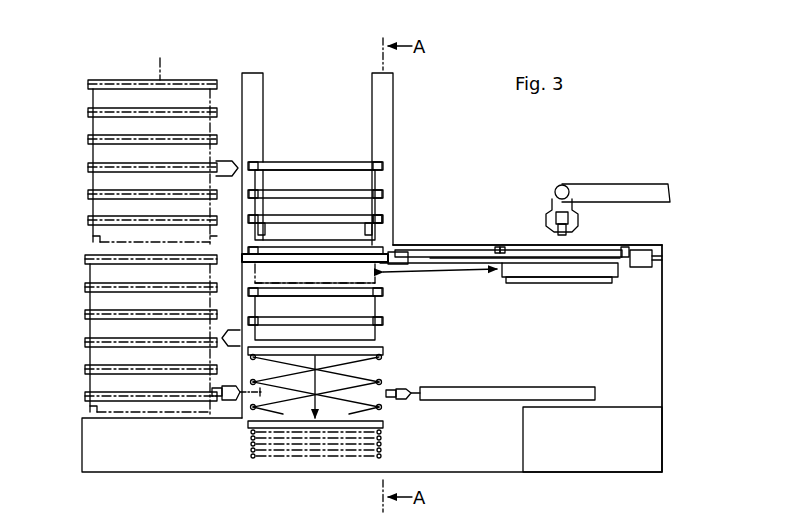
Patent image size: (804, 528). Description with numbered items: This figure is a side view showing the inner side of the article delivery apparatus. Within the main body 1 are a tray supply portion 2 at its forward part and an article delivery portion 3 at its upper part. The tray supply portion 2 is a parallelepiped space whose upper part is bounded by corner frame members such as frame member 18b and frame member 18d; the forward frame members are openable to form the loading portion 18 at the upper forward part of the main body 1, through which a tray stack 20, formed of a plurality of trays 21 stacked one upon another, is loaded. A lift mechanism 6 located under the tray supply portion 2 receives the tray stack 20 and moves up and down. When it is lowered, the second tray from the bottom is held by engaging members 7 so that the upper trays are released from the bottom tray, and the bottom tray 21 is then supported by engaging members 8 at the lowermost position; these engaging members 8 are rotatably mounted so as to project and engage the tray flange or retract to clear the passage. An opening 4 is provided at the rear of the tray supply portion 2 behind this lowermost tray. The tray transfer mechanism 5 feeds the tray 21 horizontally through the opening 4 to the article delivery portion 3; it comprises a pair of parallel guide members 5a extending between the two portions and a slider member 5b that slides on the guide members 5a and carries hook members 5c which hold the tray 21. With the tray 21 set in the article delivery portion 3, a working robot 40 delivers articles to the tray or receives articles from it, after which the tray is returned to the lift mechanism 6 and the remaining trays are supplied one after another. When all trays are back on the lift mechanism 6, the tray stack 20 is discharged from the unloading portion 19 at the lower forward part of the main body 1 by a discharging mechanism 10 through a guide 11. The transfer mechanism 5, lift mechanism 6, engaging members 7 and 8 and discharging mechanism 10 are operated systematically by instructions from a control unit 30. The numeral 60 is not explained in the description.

The main body 1 is at (453, 246).
The tray supply portion 2 is at (434, 223).
The article delivery portion 3 is at (590, 247).
The opening 4 is at (394, 250).
The tray transfer mechanism 5 is at (544, 260).
The guide members 5a is at (474, 259).
The slider member 5b is at (654, 268).
The hook members 5c is at (624, 250).
The lift mechanism 6 is at (384, 351).
The engaging members 7 is at (384, 226).
The engaging members 8 is at (255, 261).
The discharging mechanism 10 is at (466, 392).
The guide 11 is at (180, 458).
The loading portion 18 is at (291, 220).
The frame member 18b is at (256, 73).
The frame member 18d is at (378, 80).
The unloading portion 19 is at (240, 400).
The tray stack 20 is at (413, 146).
The tray 21 is at (290, 160).
The control unit 30 is at (652, 421).
The working robot 40 is at (650, 190).
The gripper 60 is at (553, 232).